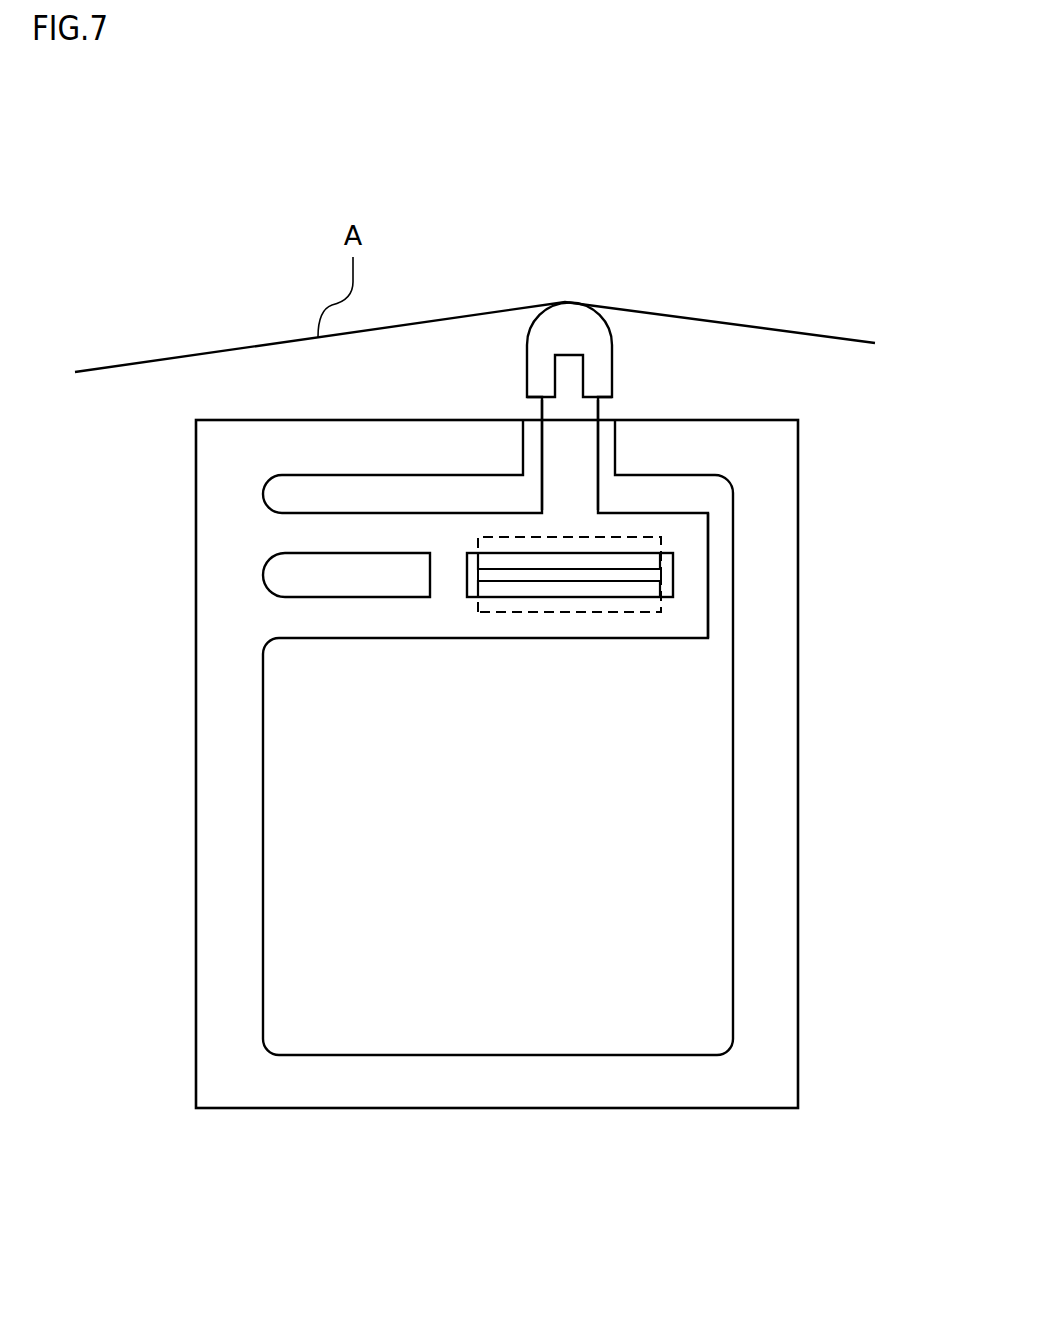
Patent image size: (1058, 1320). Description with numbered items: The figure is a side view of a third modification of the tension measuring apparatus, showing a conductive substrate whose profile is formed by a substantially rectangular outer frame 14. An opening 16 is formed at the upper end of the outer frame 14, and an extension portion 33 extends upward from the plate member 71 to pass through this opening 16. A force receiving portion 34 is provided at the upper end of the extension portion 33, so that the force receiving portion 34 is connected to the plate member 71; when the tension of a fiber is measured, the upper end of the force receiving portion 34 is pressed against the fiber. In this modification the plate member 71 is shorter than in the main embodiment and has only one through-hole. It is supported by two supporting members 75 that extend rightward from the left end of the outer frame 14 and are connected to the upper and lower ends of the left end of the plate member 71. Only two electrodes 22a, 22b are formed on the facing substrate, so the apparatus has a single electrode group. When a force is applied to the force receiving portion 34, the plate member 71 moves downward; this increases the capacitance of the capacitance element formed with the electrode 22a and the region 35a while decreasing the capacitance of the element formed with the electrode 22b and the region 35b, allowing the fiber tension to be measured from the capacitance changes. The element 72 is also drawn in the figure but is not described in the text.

The outer frame 14 is at (226, 708).
The opening 16 is at (617, 448).
The extension portion 33 is at (562, 434).
The force receiving portion 34 is at (597, 345).
The supporting members 75 is at (303, 542).
The plate member 71 is at (697, 562).
The chip component 72 is at (660, 588).
The electrode 22a is at (493, 563).
The electrode 22b is at (500, 588).
The region 35a is at (650, 547).
The region 35b is at (632, 605).